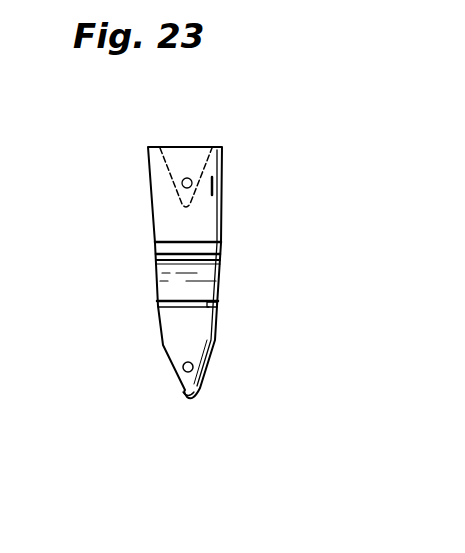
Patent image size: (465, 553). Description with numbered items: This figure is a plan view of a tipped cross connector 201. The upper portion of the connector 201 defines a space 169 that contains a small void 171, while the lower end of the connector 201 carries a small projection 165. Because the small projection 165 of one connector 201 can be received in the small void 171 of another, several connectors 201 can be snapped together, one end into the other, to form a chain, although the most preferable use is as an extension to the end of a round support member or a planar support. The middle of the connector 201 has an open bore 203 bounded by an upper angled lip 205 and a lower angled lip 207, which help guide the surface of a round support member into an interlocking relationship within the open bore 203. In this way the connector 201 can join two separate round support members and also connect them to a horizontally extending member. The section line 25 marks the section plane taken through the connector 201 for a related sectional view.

The section line 25- 25 is at (186, 147).
The small projection 165 is at (193, 367).
The space 169 is at (209, 147).
The small void 171 is at (182, 183).
The tipped cross connector 201 is at (135, 277).
The open bore 203 is at (205, 282).
The upper angled lip 205 is at (210, 245).
The lower angled lip 207 is at (209, 302).